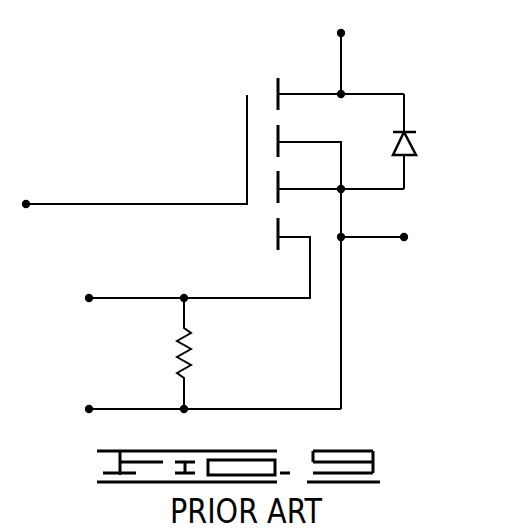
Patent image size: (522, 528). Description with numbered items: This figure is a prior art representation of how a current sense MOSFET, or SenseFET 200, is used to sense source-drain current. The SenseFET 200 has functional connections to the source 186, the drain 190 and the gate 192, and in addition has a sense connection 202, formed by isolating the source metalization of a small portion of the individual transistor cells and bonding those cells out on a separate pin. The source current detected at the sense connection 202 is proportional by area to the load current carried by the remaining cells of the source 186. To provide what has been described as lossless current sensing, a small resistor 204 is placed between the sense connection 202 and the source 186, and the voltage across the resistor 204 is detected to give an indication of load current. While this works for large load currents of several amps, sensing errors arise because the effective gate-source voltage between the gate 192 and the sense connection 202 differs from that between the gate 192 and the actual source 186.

The SenseFET 200 is at (192, 118).
The gate 192 is at (120, 203).
The drain 190 is at (342, 69).
The source 186 is at (367, 237).
The sense connection 202 is at (257, 297).
The resistor 204 is at (193, 350).